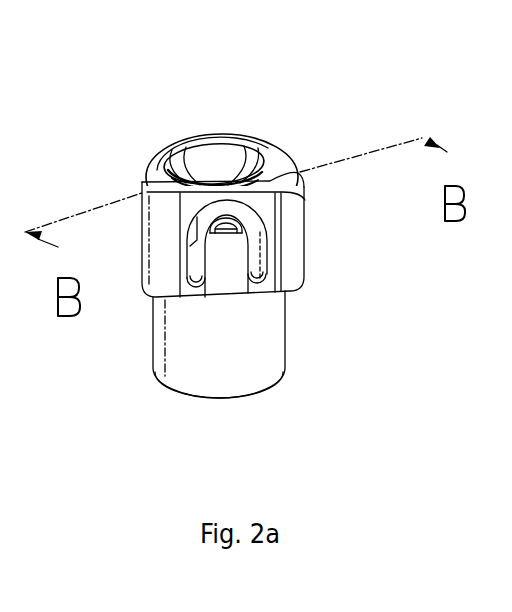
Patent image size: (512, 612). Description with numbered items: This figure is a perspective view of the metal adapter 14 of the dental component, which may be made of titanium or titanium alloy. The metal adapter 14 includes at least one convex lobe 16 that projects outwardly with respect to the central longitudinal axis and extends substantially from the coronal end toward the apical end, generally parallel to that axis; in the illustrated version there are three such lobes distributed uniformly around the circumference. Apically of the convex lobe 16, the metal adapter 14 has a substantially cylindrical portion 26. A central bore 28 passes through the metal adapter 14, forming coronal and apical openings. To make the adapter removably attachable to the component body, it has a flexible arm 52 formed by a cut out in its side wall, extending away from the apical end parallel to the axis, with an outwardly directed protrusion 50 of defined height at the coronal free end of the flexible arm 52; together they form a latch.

The metal adapter 14 is at (104, 118).
The convex lobe 16 is at (298, 267).
The substantially cylindrical portion 26 is at (281, 354).
The central bore 28 is at (231, 157).
The protrusion 50 is at (229, 236).
The flexible arm 52 is at (233, 262).